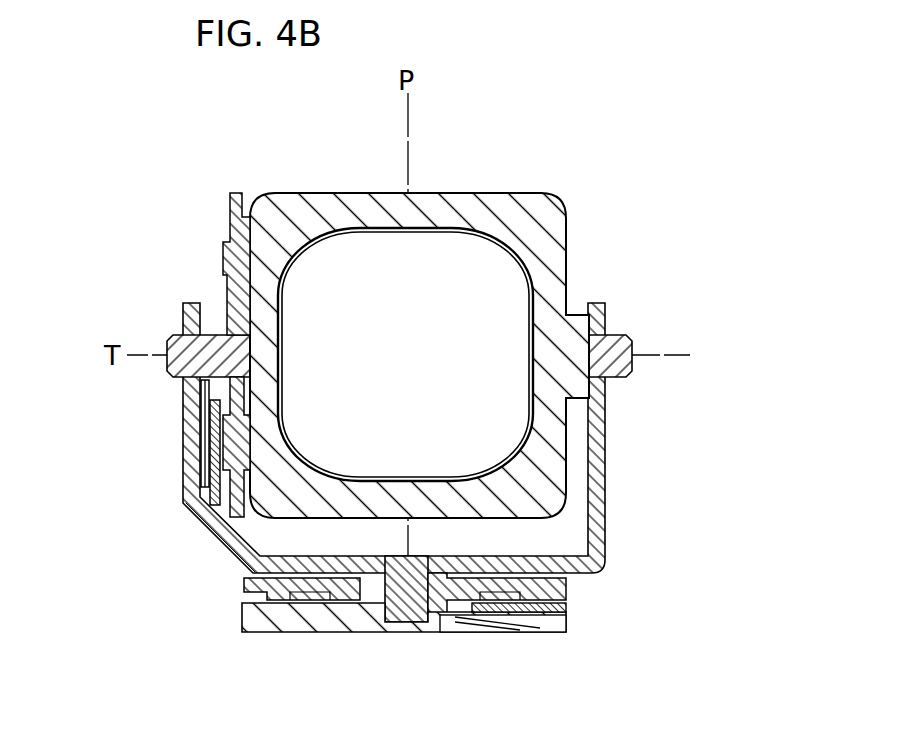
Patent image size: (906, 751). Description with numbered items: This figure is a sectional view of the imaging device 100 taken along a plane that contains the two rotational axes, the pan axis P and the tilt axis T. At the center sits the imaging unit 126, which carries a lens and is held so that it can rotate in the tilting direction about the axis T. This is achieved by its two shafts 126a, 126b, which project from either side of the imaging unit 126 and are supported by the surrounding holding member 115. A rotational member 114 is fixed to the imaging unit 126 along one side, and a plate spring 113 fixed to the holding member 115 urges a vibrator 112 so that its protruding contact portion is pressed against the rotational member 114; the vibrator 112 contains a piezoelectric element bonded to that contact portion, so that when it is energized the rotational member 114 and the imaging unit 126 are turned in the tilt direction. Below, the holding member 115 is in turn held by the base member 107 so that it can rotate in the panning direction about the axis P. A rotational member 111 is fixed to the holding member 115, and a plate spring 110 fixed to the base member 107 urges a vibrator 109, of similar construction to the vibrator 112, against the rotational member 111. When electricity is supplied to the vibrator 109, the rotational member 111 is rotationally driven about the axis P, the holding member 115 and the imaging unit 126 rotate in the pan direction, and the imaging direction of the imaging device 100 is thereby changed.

The imaging device 100 is at (641, 277).
The base member 107 is at (242, 616).
The vibrator 109 is at (560, 608).
The plate spring 110 is at (503, 632).
The rotational member 111 is at (568, 590).
The vibrator 112 is at (200, 503).
The plate spring 113 is at (210, 470).
The rotational member 114 is at (225, 263).
The holding member 115 is at (223, 552).
The imaging unit 126 is at (505, 165).
The shaft 126a is at (170, 337).
The shaft 126b is at (625, 338).